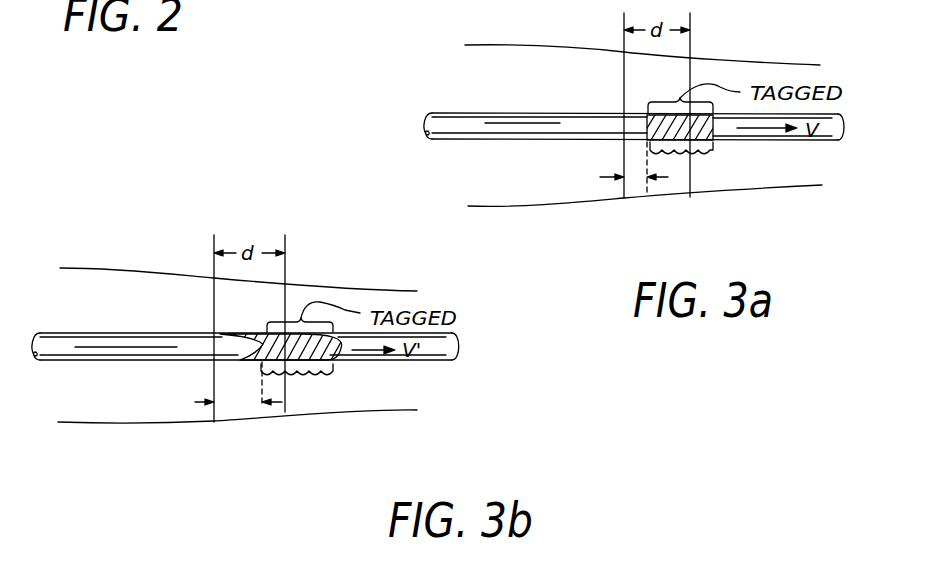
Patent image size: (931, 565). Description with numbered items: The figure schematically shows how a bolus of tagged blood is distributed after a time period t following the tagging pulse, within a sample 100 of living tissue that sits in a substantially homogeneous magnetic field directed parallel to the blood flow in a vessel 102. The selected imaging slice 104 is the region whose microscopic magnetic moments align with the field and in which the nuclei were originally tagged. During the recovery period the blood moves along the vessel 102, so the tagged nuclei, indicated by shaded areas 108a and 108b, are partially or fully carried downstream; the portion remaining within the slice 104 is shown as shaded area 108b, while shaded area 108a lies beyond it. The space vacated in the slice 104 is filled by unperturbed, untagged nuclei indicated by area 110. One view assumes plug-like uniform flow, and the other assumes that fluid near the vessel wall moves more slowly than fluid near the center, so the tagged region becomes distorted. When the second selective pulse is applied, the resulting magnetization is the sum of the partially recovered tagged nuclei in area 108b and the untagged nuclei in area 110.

In FIG. 3a, the sample 100 is at (536, 208).
In FIG. 3b, the sample 100 is at (131, 428).
In FIG. 3a, the vessel 102 is at (517, 141).
In FIG. 3b, the vessel 102 is at (150, 361).
In FIG. 3a, the slice 104 is at (692, 184).
In FIG. 3b, the slice 104 is at (290, 404).
In FIG. 3a, the shaded area 108a is at (700, 148).
In FIG. 3b, the shaded area 108a is at (310, 374).
In FIG. 3a, the shaded area 108b is at (667, 155).
In FIG. 3b, the shaded area 108b is at (272, 371).
In FIG. 3a, the area of unperturbed nuclei 110 is at (633, 122).
In FIG. 3b, the area of unperturbed nuclei 110 is at (236, 328).